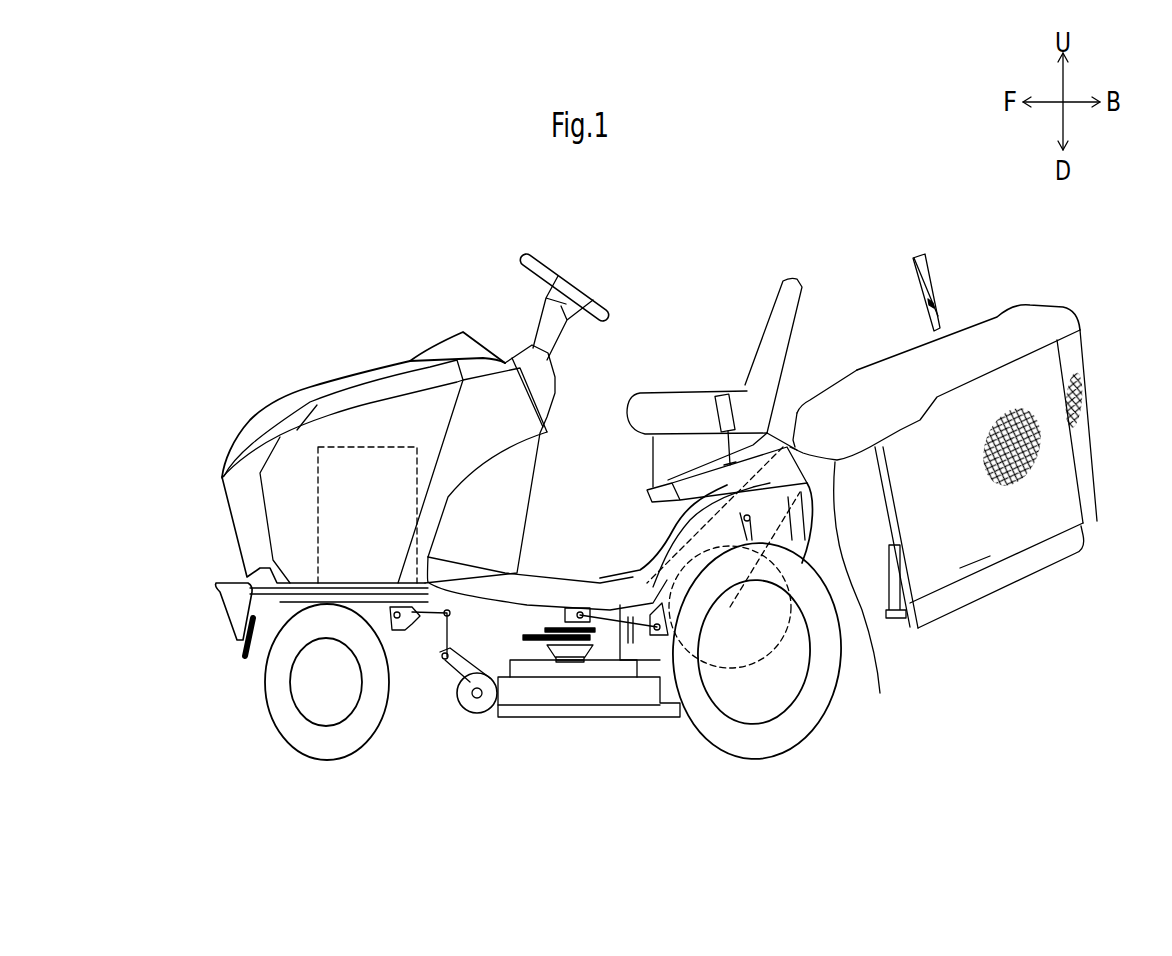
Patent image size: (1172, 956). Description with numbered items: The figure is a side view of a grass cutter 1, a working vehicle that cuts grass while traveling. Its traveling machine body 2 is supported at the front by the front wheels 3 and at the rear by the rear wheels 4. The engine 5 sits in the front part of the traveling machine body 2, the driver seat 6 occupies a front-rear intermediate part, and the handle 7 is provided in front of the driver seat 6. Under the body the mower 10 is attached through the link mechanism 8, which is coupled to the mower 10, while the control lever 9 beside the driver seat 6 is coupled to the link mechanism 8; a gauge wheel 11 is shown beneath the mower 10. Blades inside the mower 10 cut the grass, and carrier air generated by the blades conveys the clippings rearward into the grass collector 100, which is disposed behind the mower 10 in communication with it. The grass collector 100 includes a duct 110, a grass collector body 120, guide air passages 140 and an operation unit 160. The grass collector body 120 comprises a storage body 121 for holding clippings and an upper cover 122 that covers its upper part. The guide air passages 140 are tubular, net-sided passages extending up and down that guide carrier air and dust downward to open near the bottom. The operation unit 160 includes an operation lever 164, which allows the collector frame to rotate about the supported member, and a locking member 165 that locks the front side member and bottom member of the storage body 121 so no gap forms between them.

The grass cutter 1 is at (313, 210).
The traveling machine body 2 is at (258, 605).
The front wheels 3 is at (282, 712).
The rear wheels 4 is at (803, 720).
The engine 5 is at (338, 447).
The driver seat 6 is at (763, 327).
The handle 7 is at (557, 270).
The link mechanism 8 is at (452, 667).
The control lever 9 is at (719, 395).
The mower 10 is at (575, 693).
The gauge wheel 11 is at (520, 660).
The grass collector 100 is at (963, 458).
The duct 110 is at (863, 594).
The grass collector body 120 is at (1033, 584).
The storage body 121 is at (960, 568).
The upper cover 122 is at (1020, 303).
The guide air passages 140 is at (1098, 382).
The operation unit 160 is at (941, 240).
The operation lever 164 is at (930, 270).
The locking member 165 is at (897, 620).